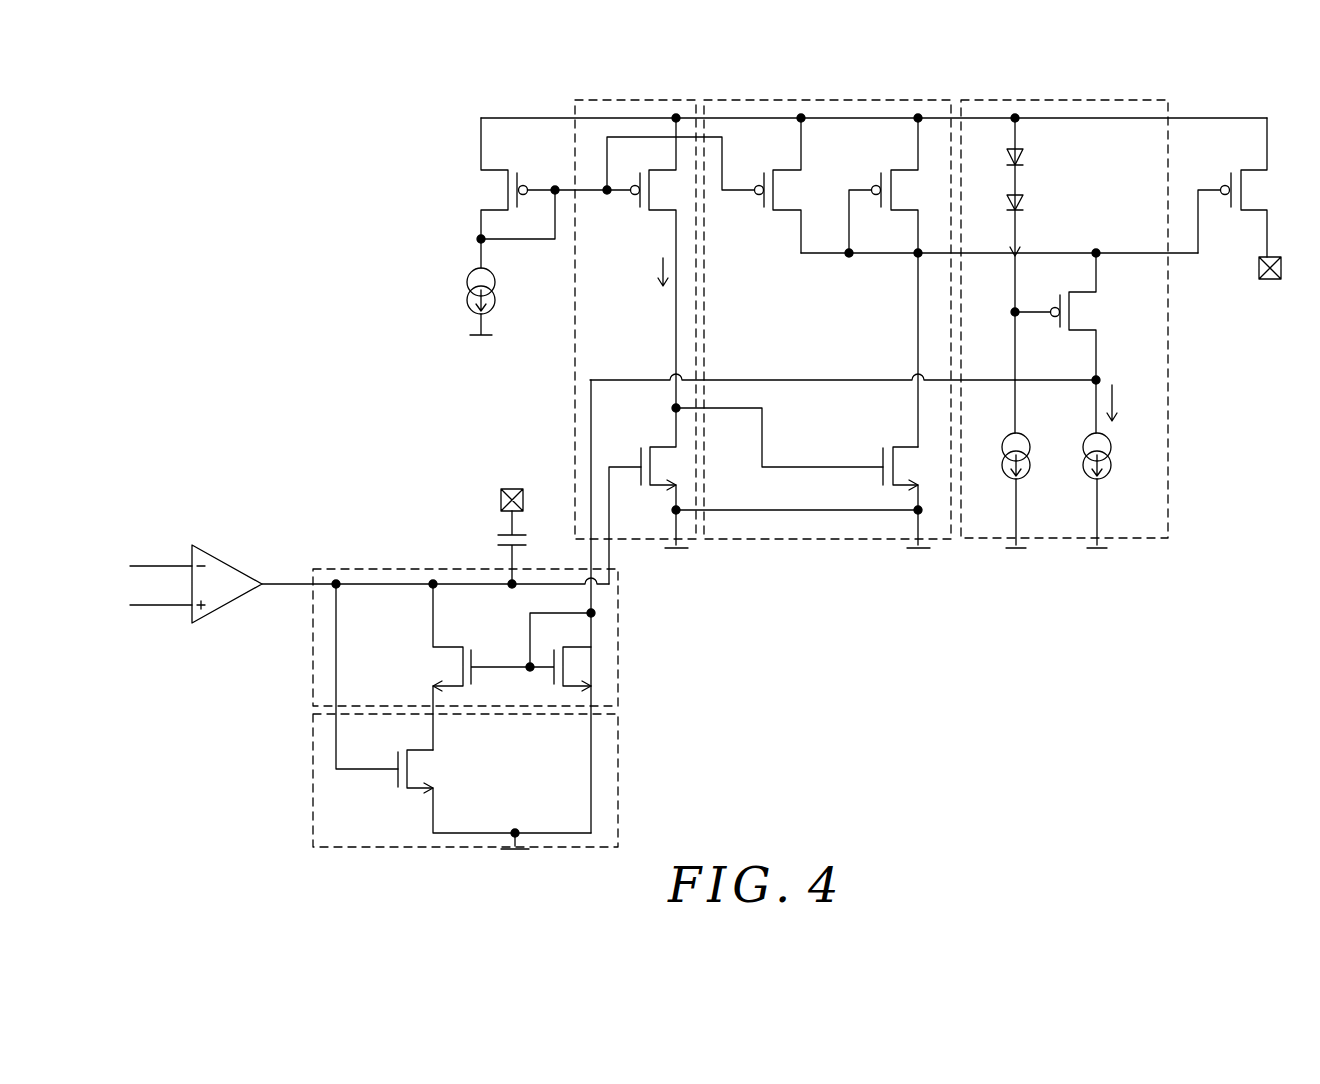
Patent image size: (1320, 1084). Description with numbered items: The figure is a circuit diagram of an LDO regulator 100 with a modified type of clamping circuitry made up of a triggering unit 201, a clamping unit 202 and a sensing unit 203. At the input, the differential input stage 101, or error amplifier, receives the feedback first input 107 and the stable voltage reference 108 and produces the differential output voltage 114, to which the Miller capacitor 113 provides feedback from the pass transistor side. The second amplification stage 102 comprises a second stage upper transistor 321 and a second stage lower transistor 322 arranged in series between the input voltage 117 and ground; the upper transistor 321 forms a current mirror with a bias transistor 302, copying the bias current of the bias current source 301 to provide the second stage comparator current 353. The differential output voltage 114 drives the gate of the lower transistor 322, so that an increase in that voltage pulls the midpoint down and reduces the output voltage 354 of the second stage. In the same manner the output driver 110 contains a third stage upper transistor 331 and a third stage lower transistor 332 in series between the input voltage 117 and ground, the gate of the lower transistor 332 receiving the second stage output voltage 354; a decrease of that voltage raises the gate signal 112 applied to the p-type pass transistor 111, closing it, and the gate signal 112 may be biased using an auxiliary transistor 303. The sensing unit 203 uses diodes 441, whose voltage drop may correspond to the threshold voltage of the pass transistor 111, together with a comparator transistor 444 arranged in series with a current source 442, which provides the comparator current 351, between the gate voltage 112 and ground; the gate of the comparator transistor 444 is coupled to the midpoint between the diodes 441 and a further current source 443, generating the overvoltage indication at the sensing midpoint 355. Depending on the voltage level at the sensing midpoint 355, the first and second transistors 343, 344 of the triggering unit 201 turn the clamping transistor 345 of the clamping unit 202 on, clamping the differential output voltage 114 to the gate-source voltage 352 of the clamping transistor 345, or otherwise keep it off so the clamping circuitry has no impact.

The LDO regulator 100 is at (302, 201).
The differential input stage 101 is at (234, 564).
The second amplification stage 102 is at (645, 541).
The first input 107 is at (151, 607).
The voltage reference 108 is at (150, 564).
The output driver 110 is at (851, 541).
The pass transistor 111 is at (1222, 182).
The gate signal 112 is at (1198, 253).
The Miller capacitor 113 is at (498, 540).
The differential output voltage 114 is at (288, 588).
The input voltage 117 is at (481, 135).
The triggering unit 201 is at (621, 622).
The clamping unit 202 is at (621, 771).
The sensing unit 203 is at (1041, 541).
The bias current source 301 is at (466, 292).
The bias transistor 302 is at (498, 190).
The auxiliary transistor 303 is at (759, 216).
The second stage upper transistor 321 is at (632, 216).
The second stage lower transistor 322 is at (639, 442).
The third stage upper transistor 331 is at (870, 180).
The third stage lower transistor 332 is at (880, 442).
The first transistor 343 is at (604, 666).
The second transistor 344 is at (447, 668).
The clamping transistor 345 is at (420, 772).
The comparator current Icomp 351 is at (1135, 393).
The gate-source voltage 352 is at (396, 800).
The second stage comparator current I2c 353 is at (646, 281).
The output voltage of the second stage 354 is at (794, 463).
The sensing midpoint 355 is at (1100, 378).
The diodes 441 is at (1021, 190).
The current source 442 is at (1077, 439).
The further current source 443 is at (997, 439).
The comparator transistor 444 is at (1092, 306).